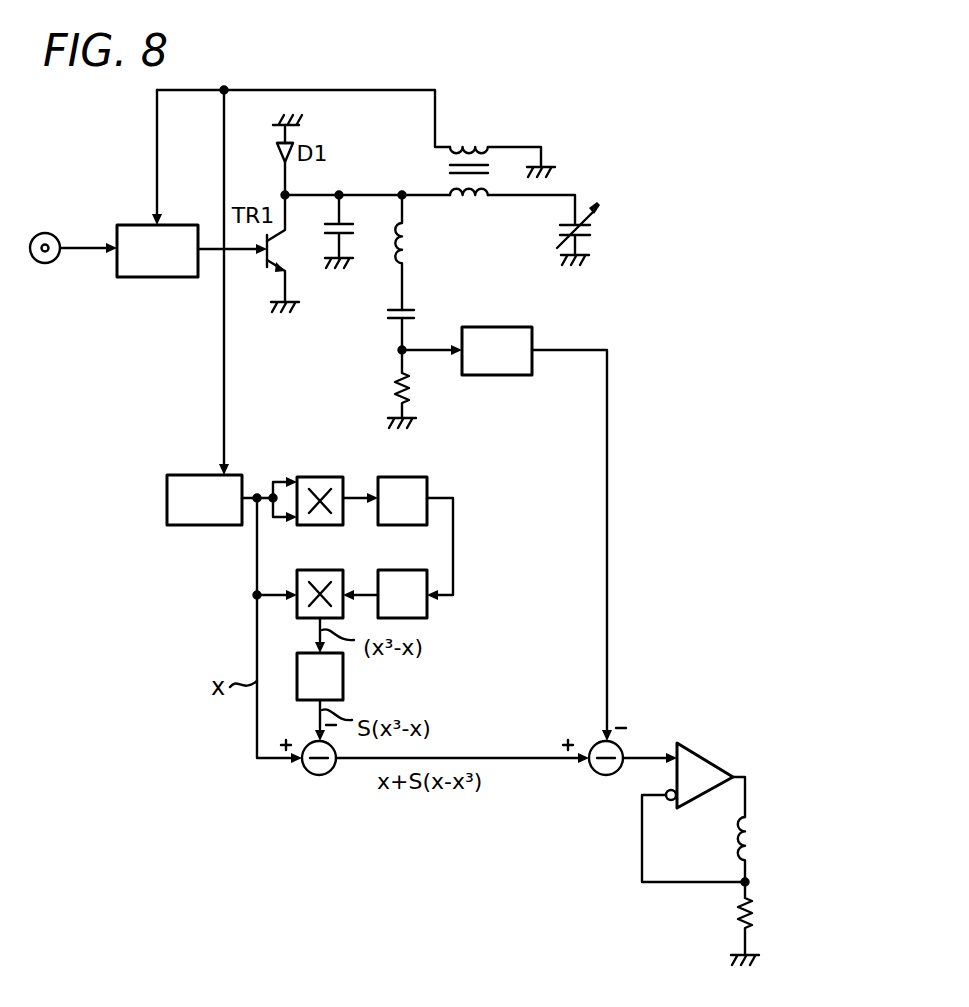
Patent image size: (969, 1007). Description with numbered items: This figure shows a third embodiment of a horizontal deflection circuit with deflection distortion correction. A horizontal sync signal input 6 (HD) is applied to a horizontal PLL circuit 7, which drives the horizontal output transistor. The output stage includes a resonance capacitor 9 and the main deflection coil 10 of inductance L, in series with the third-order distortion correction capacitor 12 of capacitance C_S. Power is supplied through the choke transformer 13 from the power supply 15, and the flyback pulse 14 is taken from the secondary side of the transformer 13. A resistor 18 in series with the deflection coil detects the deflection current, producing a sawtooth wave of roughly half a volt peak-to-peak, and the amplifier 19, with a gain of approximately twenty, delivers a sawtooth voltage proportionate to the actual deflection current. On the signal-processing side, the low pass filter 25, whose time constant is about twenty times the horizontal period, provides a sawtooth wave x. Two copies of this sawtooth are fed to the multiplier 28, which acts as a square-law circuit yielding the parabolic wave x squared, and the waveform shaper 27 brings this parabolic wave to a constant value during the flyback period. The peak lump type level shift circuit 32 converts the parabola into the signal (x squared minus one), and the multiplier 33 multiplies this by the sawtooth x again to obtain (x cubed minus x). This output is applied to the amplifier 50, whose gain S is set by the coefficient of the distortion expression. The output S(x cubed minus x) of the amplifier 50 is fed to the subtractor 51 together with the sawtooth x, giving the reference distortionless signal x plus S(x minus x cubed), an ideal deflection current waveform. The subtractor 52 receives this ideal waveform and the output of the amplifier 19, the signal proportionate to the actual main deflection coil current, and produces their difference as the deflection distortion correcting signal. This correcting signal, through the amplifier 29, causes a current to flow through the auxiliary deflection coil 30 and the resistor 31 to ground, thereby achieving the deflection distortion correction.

The horizontal sync signal input 6 is at (46, 232).
The horizontal PLL circuit 7 is at (186, 226).
The resonance capacitor 9 is at (313, 240).
The main deflection coil 10 is at (391, 238).
The third-order distortion correction capacitor 12 is at (374, 325).
The choke transformer 13 is at (466, 140).
The flyback pulse 14 is at (401, 88).
The power supply 15 is at (567, 230).
The resistor 18 is at (375, 389).
The amplifier 19 is at (520, 327).
The low pass filter 25 is at (246, 475).
The waveform shaper 27 is at (423, 477).
The multiplier 28 is at (328, 477).
The amplifier 29 is at (710, 760).
The auxiliary deflection coil 30 is at (757, 842).
The resistor 31 is at (757, 922).
The peak lump type level shift circuit 32 is at (412, 570).
The multiplier 33 is at (326, 570).
The amplifier 50 is at (343, 688).
The subtractor 51 is at (308, 772).
The subtractor 52 is at (607, 774).